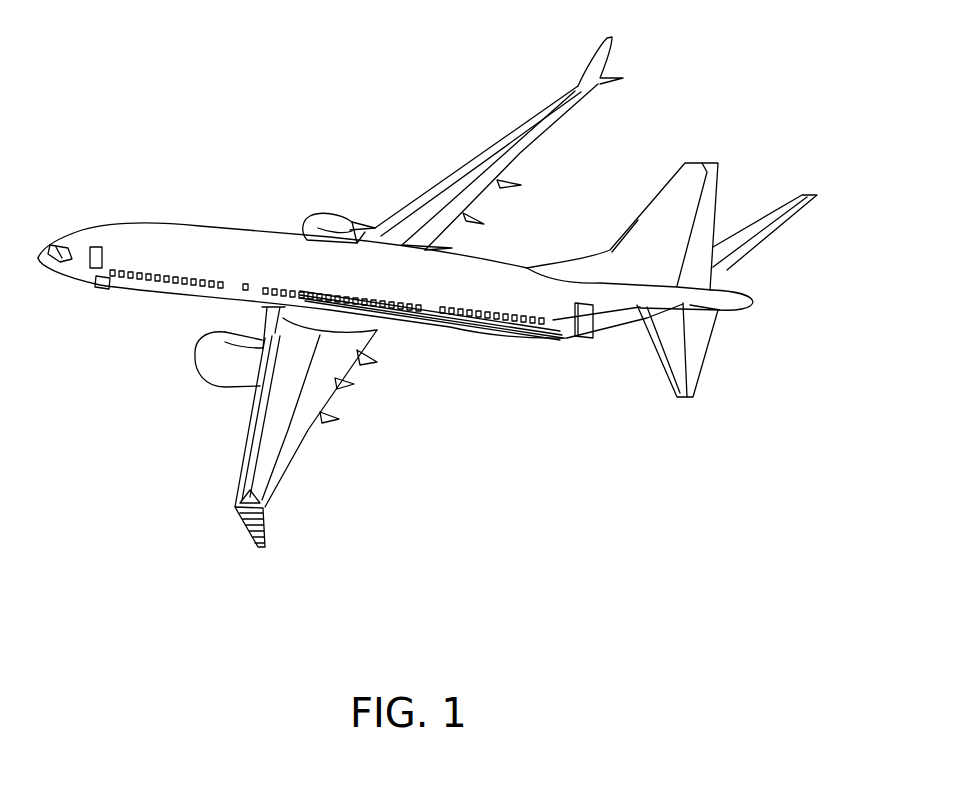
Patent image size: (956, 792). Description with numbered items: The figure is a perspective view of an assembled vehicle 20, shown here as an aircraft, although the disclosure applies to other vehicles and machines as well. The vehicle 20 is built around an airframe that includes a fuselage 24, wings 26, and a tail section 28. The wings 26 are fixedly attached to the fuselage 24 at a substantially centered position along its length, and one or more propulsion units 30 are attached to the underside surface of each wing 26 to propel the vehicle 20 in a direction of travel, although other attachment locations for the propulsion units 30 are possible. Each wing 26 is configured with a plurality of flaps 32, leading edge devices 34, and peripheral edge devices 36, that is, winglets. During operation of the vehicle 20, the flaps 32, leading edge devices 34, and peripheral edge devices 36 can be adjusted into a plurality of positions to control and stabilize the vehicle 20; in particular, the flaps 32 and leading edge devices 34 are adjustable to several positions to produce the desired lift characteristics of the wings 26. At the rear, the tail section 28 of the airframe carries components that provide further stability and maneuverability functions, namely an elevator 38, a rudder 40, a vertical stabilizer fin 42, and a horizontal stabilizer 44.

The vehicle 20 is at (157, 117).
The fuselage 24 is at (178, 252).
The wings 26 is at (458, 192).
The tail section 28 is at (741, 87).
The propulsion unit 30 is at (346, 222).
The flaps 32 is at (517, 152).
The leading edge devices 34 is at (520, 128).
The peripheral edge devices 36 is at (598, 60).
The elevator 38 is at (747, 265).
The rudder 40 is at (710, 198).
The vertical stabilizer fin 42 is at (688, 190).
The horizontal stabilizer 44 is at (673, 363).